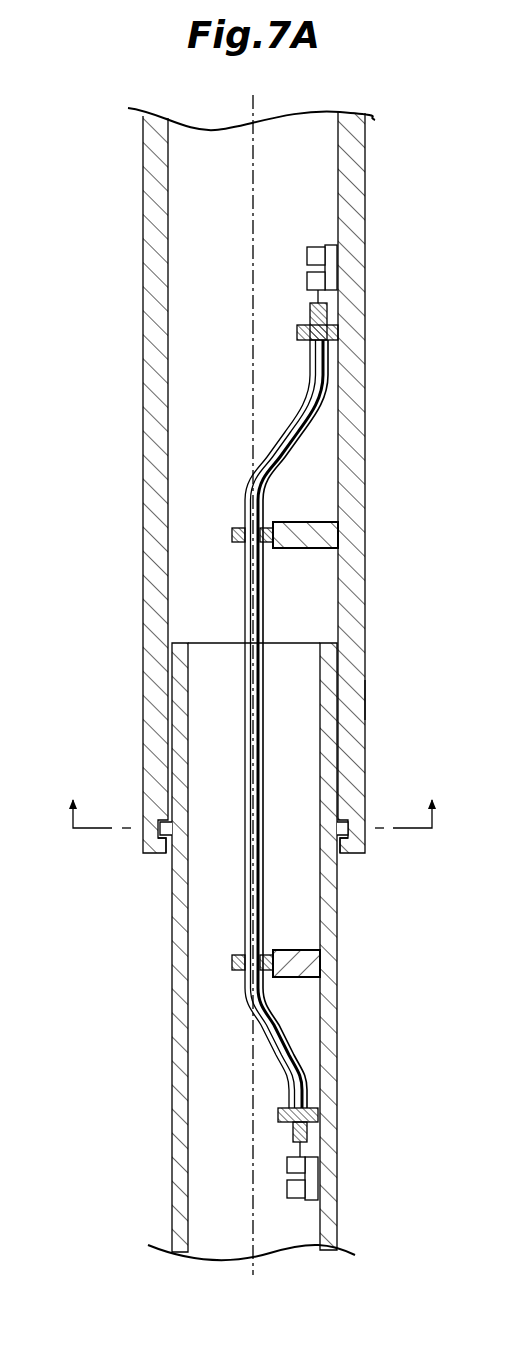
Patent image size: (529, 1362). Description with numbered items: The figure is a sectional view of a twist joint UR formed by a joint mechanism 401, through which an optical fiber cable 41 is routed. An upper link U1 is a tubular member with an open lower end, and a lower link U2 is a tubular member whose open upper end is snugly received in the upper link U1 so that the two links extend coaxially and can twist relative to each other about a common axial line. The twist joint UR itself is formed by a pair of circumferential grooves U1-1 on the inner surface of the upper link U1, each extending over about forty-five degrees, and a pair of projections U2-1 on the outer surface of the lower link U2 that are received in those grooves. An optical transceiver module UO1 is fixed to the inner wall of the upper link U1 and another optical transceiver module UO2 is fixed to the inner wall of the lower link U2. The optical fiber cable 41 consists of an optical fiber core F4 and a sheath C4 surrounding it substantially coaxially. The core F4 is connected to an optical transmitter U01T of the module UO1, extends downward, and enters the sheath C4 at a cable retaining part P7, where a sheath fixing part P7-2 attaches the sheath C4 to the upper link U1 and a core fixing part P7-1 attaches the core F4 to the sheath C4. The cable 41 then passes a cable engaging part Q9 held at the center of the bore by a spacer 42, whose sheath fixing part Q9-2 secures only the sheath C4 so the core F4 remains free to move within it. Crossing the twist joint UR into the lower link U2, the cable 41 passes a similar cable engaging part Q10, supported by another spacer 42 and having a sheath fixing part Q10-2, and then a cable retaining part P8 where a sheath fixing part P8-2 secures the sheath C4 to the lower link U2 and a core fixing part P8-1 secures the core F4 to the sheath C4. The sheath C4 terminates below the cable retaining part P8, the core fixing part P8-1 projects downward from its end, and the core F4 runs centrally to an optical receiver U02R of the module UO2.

The joint mechanism 401 is at (134, 244).
The upper link U1 is at (143, 430).
The lower link U2 is at (172, 1068).
The circumferential grooves U1-1 is at (163, 853).
The projections U2-1 is at (345, 853).
The twist joint UR is at (380, 690).
The sheath C4 is at (320, 413).
The optical fiber cable 41 is at (266, 457).
The optical fiber core F4 is at (284, 432).
The optical transceiver module UO1 is at (337, 276).
The optical transmitter U01T is at (309, 280).
The cable retaining part P7 is at (338, 335).
The core fixing part P7-1 is at (311, 312).
The sheath fixing part P7-2 is at (297, 332).
The spacer 42 is at (300, 542).
The cable engaging part Q9 is at (273, 519).
The sheath fixing part Q9-2 is at (231, 533).
The cable engaging part Q10 is at (273, 951).
The sheath fixing part Q10-2 is at (231, 962).
The cable retaining part P8 is at (318, 1112).
The core fixing part P8-1 is at (293, 1135).
The sheath fixing part P8-2 is at (278, 1112).
The optical transceiver module UO2 is at (318, 1180).
The optical receiver U02R is at (287, 1165).